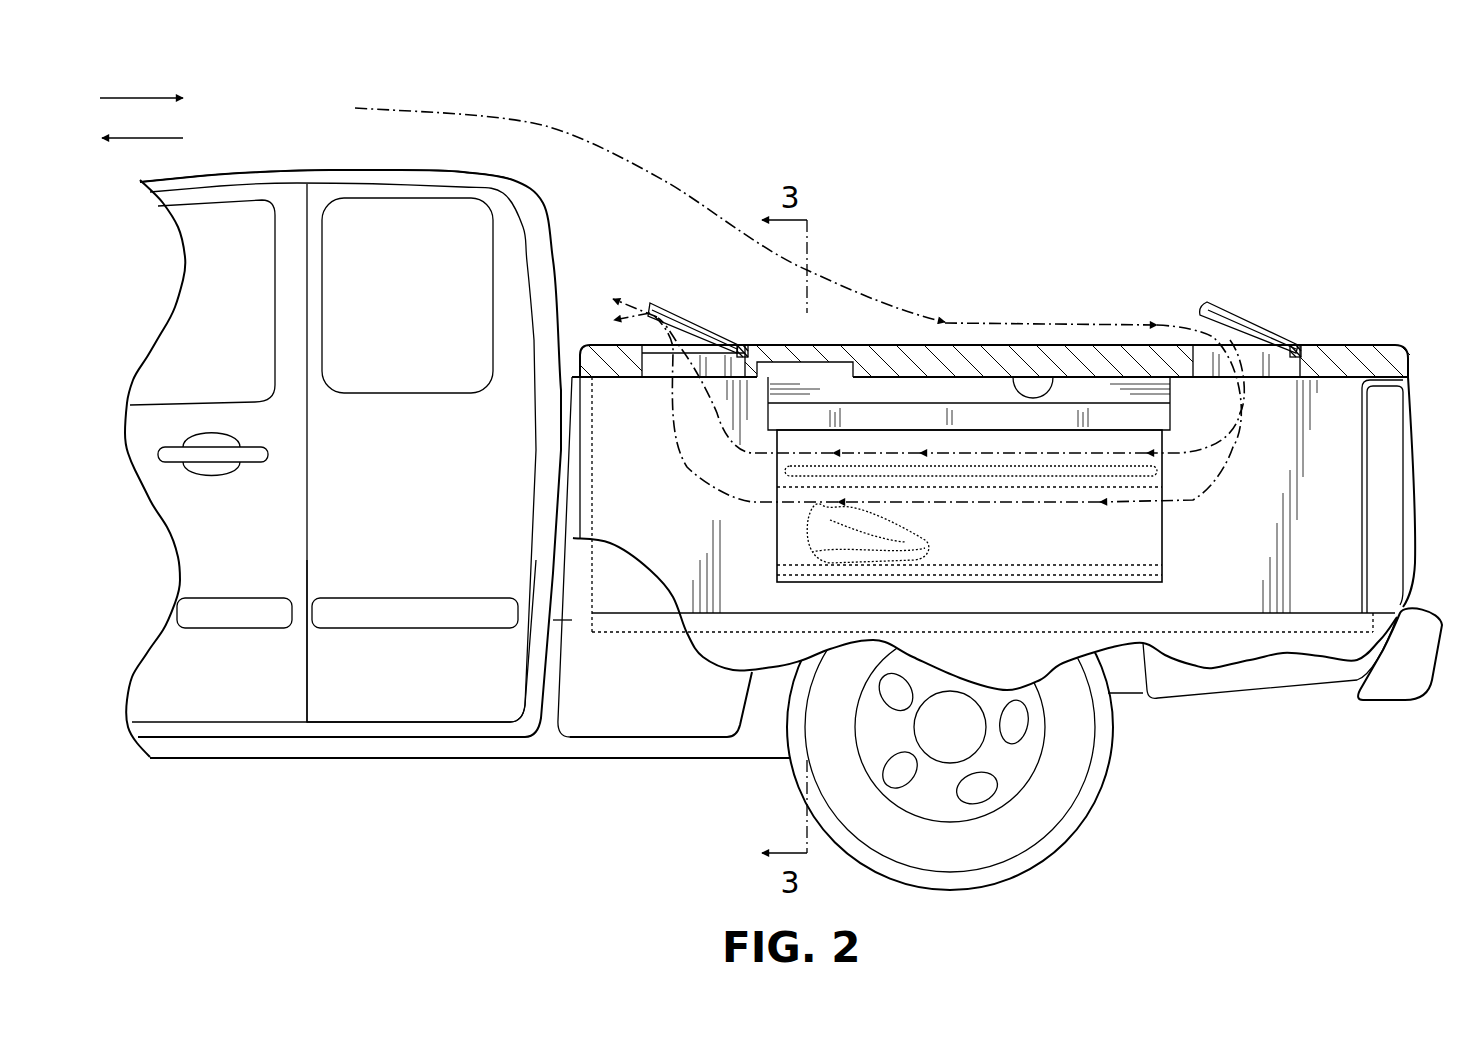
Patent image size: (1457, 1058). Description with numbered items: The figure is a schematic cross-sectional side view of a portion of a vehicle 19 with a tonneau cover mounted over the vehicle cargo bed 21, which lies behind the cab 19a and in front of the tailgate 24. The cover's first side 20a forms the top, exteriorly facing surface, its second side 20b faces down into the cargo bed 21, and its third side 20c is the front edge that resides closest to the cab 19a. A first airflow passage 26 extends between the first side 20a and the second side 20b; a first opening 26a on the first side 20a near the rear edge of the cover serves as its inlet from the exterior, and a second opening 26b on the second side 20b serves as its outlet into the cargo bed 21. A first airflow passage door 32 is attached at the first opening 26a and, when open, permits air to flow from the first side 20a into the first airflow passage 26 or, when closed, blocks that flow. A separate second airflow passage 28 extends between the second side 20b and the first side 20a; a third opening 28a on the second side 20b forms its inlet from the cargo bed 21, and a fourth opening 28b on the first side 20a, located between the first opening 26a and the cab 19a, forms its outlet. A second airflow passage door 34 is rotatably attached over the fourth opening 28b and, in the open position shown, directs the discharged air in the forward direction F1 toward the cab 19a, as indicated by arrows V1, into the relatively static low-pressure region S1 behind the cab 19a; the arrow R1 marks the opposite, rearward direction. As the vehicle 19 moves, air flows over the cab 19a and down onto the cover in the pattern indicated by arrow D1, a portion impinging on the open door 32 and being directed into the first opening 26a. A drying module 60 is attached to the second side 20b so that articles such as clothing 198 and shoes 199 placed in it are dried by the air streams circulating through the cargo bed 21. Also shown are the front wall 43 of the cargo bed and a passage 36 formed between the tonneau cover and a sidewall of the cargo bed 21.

The vehicle 19 is at (230, 125).
The cab 19a is at (340, 172).
The first side of the cover 20a is at (990, 343).
The second side of the cover 20b is at (1053, 378).
The third side of the cover 20c is at (580, 360).
The cargo bed 21 is at (670, 547).
The tailgate 24 is at (1413, 453).
The first airflow passage 26 is at (1283, 372).
The first opening 26a is at (1192, 338).
The second opening 26b is at (1258, 380).
The second airflow passage 28 is at (655, 368).
The third opening 28a is at (662, 362).
The fourth opening 28b is at (608, 303).
The first airflow passage door 32 is at (1222, 305).
The second airflow passage door 34 is at (697, 323).
The passage 36 is at (767, 360).
The front wall of the cargo bed 43 is at (553, 573).
The drying module 60 is at (1165, 527).
The clothing 198 is at (1057, 470).
The shoes 199 is at (873, 540).
The rearward direction R1 is at (141, 82).
The forward direction F1 is at (142, 153).
The airflow pattern arrow D1 is at (507, 113).
The discharge airflow arrows V1 is at (637, 310).
The low-pressure region S1 is at (600, 268).